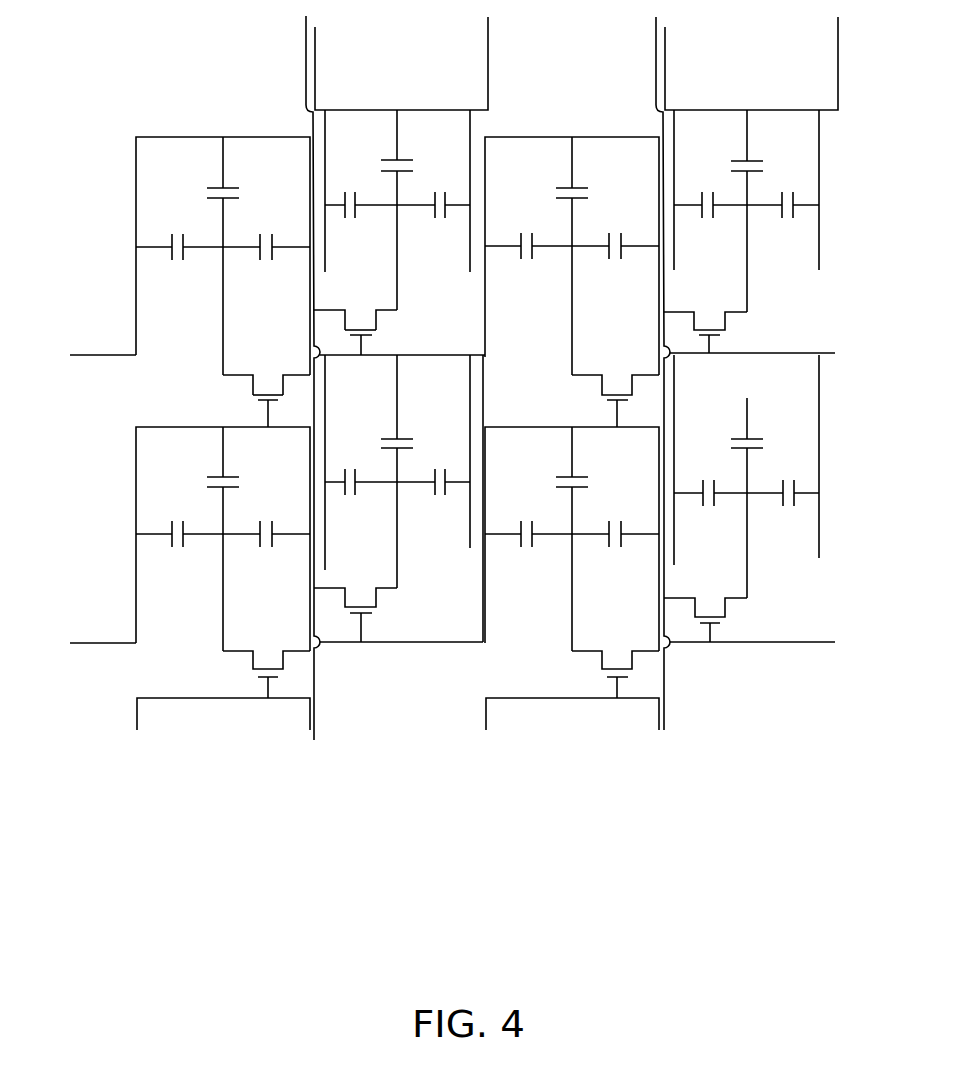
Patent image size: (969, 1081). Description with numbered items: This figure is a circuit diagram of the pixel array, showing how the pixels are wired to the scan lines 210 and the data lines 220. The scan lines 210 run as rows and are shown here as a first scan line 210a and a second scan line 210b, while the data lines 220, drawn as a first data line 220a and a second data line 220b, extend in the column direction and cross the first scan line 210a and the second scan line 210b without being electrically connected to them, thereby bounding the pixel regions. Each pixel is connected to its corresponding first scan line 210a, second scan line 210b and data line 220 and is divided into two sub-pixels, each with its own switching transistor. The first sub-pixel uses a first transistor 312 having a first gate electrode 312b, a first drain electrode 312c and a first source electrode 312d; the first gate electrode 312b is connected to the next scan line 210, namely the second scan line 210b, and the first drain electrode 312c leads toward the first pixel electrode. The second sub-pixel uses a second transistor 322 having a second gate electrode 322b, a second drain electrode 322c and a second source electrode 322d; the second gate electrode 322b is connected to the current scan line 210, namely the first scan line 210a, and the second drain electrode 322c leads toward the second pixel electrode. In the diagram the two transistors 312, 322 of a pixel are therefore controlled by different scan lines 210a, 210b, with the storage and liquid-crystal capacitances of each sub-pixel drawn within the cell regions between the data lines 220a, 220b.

The scan line 210 is at (451, 447).
The first scan line 210a is at (96, 352).
The second scan line 210b is at (96, 641).
The data line 220 is at (572, 378).
The first data line 220a is at (317, 67).
The second data line 220b is at (666, 67).
The first transistor 312 is at (214, 614).
The first gate electrode 312b is at (267, 404).
The first drain electrode 312c is at (224, 376).
The first source electrode 312d is at (300, 376).
The second transistor 322 is at (589, 584).
The second gate electrode 322b is at (362, 345).
The second drain electrode 322c is at (392, 313).
The second source electrode 322d is at (330, 312).